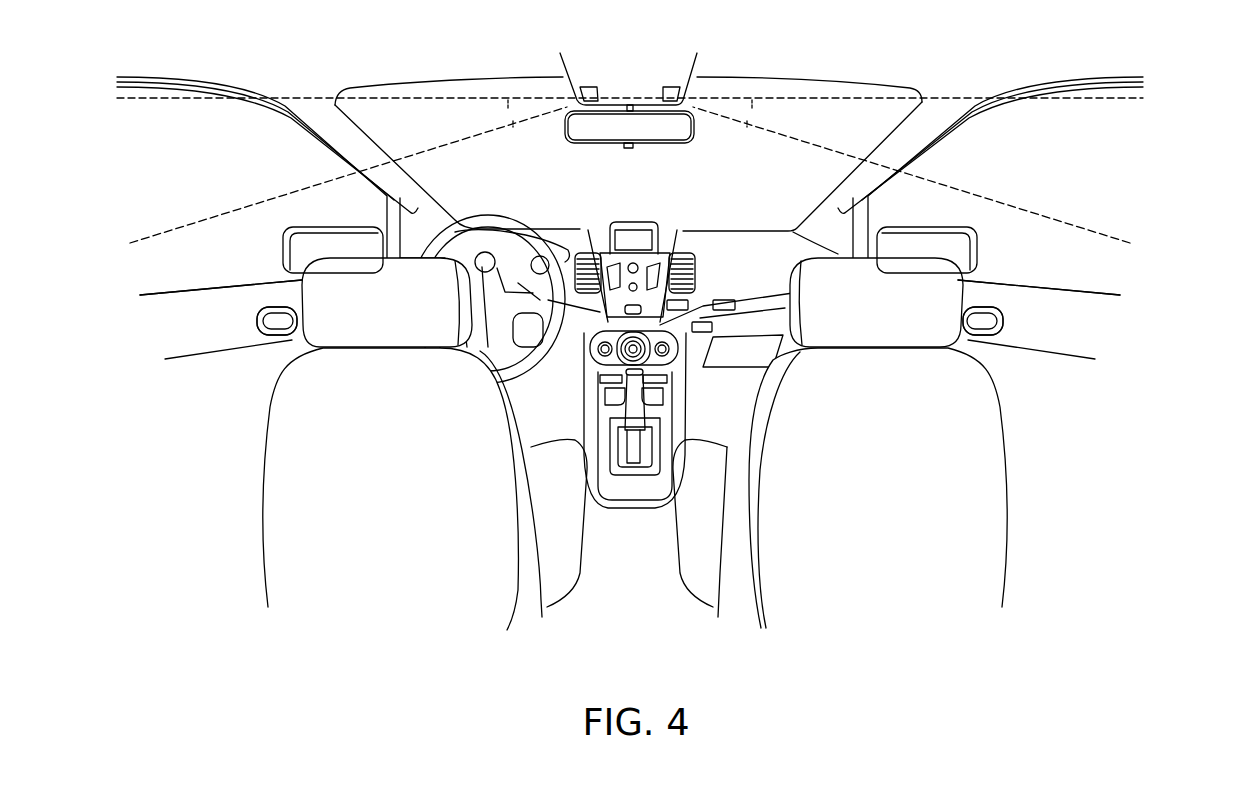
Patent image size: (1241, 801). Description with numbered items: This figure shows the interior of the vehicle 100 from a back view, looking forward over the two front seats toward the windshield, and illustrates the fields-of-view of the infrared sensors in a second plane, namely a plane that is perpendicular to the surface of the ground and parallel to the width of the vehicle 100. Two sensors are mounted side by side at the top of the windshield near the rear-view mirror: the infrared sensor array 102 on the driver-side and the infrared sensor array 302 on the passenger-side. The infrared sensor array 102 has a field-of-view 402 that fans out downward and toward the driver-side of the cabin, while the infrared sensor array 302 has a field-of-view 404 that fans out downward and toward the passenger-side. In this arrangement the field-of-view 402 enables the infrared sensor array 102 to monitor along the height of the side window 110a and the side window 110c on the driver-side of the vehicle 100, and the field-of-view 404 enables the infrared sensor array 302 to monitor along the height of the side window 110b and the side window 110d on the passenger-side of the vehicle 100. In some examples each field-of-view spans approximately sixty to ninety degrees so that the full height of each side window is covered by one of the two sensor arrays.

The vehicle 100 is at (637, 537).
The infrared sensor array 102 is at (589, 87).
The infrared sensor array 302 is at (671, 87).
The field-of-view 402 is at (513, 120).
The field-of-view 404 is at (747, 120).
The side window 110a is at (120, 170).
The side window 110b is at (1138, 170).
The side window 110c is at (221, 307).
The side window 110d is at (1039, 307).